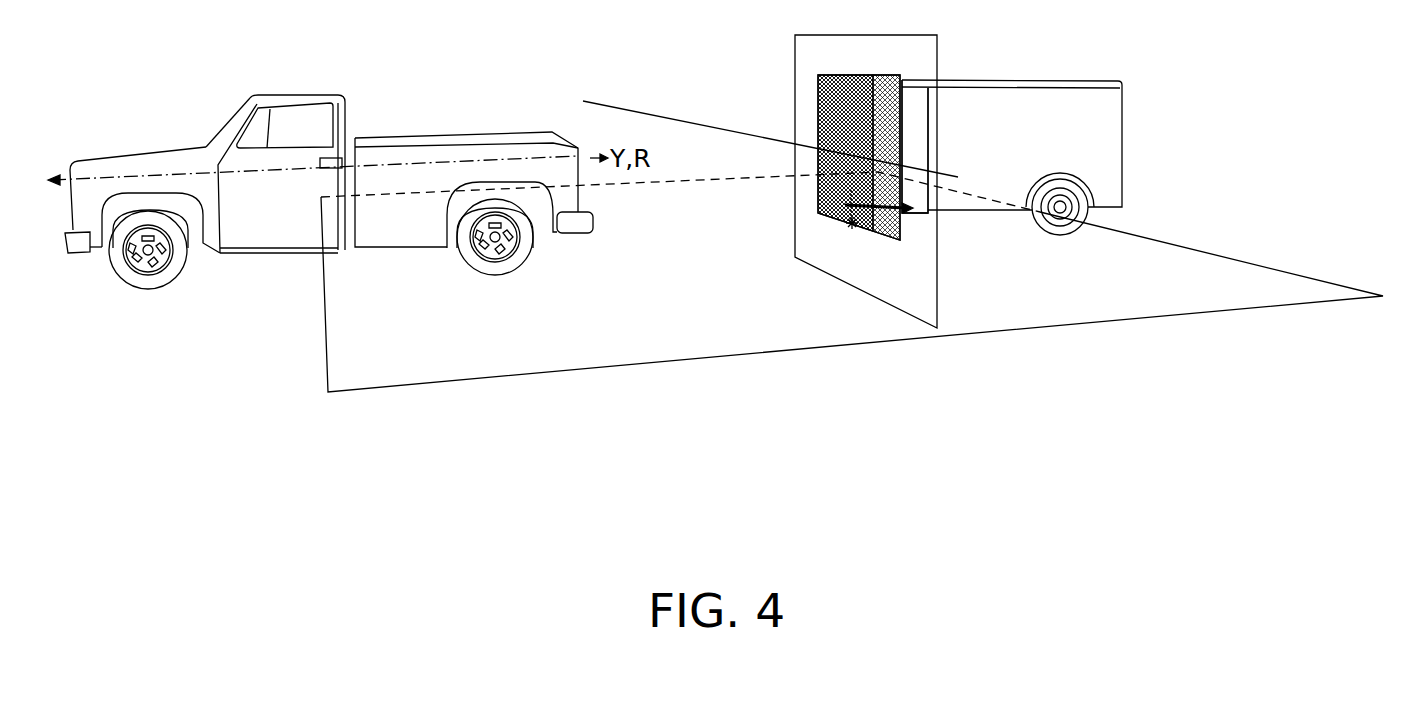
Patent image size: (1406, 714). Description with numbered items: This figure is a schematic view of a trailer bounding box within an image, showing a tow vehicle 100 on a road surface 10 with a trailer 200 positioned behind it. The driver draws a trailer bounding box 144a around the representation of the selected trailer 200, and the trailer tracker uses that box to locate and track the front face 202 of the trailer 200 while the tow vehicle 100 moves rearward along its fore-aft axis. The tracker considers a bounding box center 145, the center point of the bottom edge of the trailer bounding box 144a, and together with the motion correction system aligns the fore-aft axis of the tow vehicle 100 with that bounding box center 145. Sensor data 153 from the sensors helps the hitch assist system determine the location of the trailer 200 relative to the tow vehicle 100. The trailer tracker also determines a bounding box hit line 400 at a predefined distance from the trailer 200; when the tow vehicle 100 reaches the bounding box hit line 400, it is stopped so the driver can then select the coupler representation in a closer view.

The road surface 10 is at (325, 377).
The tow vehicle 100 is at (307, 92).
The trailer 200 is at (1007, 123).
The front face of the trailer 202 is at (908, 110).
The bounding box hit line 400 is at (692, 123).
The sensor data 153 is at (937, 290).
The trailer bounding box 144a is at (898, 240).
The bounding box center 145 is at (852, 226).